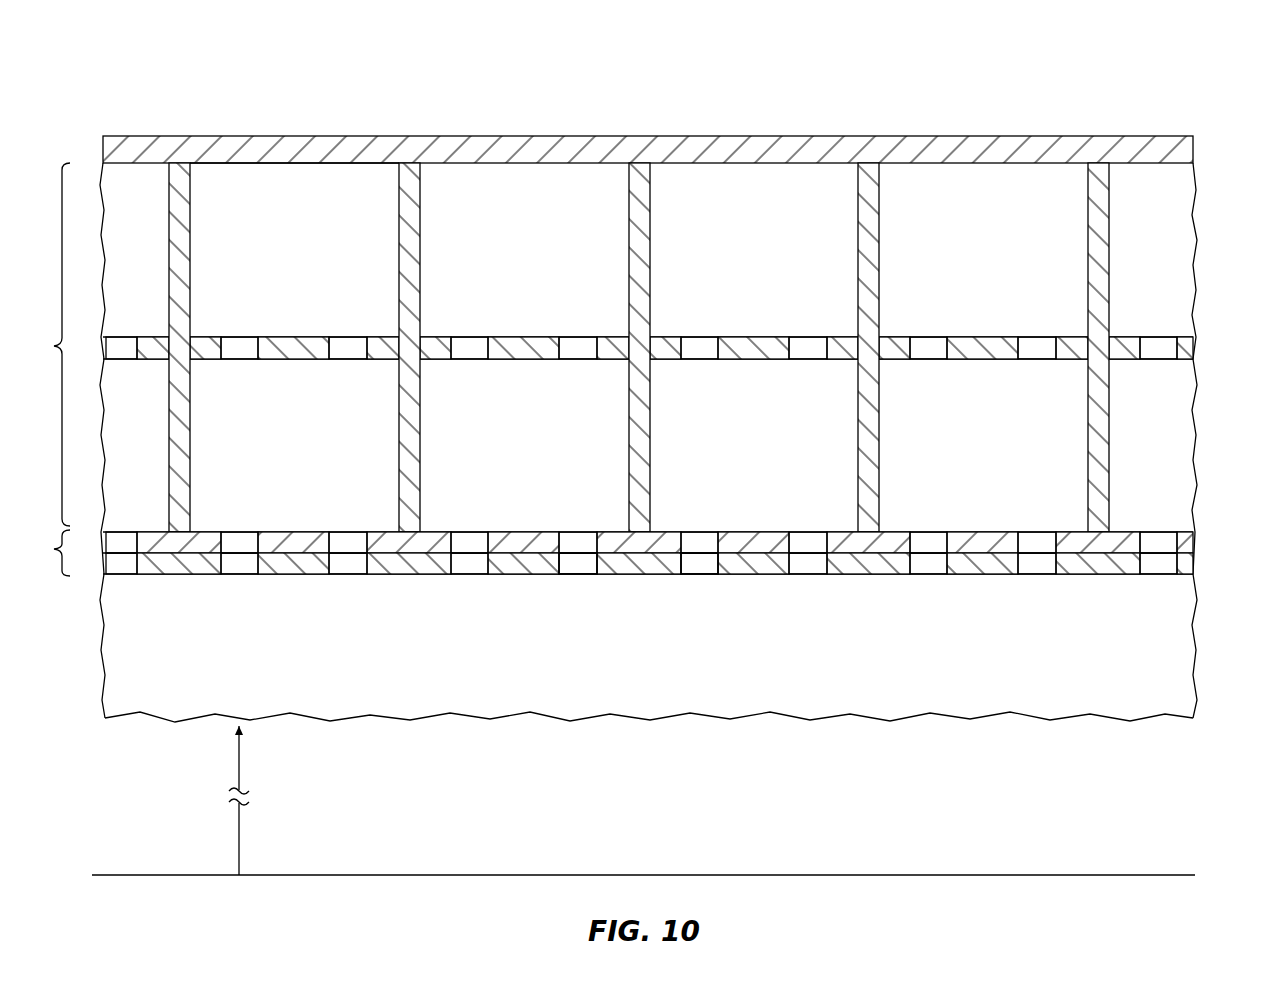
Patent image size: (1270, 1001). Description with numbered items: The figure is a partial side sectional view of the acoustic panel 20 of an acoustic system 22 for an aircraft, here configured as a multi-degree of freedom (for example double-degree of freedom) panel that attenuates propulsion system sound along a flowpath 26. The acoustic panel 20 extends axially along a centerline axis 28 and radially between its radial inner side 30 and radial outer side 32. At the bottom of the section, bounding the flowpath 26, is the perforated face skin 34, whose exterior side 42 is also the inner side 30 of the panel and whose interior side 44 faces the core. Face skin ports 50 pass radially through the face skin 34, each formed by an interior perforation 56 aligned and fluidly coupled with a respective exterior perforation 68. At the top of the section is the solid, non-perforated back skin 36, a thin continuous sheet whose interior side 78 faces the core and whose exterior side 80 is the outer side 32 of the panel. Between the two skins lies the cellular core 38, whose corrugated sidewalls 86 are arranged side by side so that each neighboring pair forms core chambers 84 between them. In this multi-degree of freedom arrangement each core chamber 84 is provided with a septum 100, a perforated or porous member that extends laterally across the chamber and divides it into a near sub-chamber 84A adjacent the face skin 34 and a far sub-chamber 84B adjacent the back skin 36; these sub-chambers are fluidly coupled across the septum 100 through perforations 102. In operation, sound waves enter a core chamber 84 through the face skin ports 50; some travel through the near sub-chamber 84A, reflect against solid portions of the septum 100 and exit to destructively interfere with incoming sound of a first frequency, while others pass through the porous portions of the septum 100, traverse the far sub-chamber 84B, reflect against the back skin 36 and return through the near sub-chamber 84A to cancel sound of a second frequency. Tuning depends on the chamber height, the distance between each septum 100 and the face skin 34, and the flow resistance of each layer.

The acoustic panel 20 is at (75, 107).
The acoustic system 22 is at (1213, 67).
The flowpath 26 is at (652, 680).
The centerline axis 28 is at (122, 878).
The radial inner side 30 is at (648, 590).
The radial outer side 32 is at (648, 129).
The face skin 34 is at (46, 553).
The back skin 36 is at (607, 129).
The cellular core 38 is at (46, 344).
The exterior side 42 is at (270, 574).
The interior side 44 is at (291, 532).
The face skin ports 50 is at (577, 582).
The interior perforations 56 is at (577, 538).
The exterior perforations 68 is at (692, 576).
The interior side of back skin 78 is at (223, 164).
The exterior side of back skin 80 is at (228, 136).
The core chambers 84 is at (356, 206).
The near sub-chamber 84A is at (312, 450).
The far sub-chamber 84B is at (312, 255).
The corrugated sidewalls 86 is at (190, 462).
The septum 100 is at (283, 337).
The perforations 102 is at (353, 359).